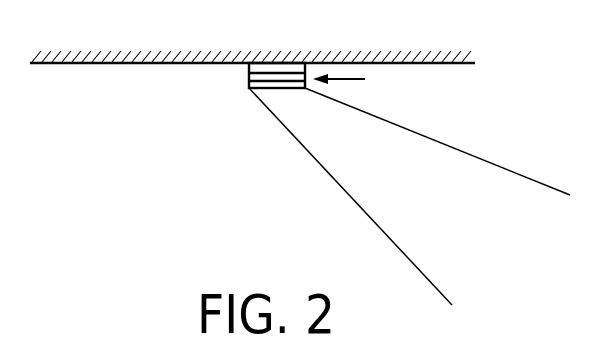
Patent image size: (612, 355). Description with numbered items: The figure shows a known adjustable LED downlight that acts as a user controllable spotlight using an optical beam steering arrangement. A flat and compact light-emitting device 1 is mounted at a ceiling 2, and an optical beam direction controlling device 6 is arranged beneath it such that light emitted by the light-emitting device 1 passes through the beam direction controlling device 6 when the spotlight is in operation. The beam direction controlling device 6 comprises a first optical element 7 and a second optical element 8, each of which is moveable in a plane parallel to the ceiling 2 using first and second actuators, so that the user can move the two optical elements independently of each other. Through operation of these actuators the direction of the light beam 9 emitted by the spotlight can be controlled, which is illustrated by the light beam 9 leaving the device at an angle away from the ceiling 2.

The light-emitting device 1 is at (249, 66).
The ceiling 2 is at (433, 64).
The optical beam direction controlling device 6 is at (351, 83).
The first optical element 7 is at (249, 75).
The second optical element 8 is at (249, 86).
The light beam 9 is at (376, 210).